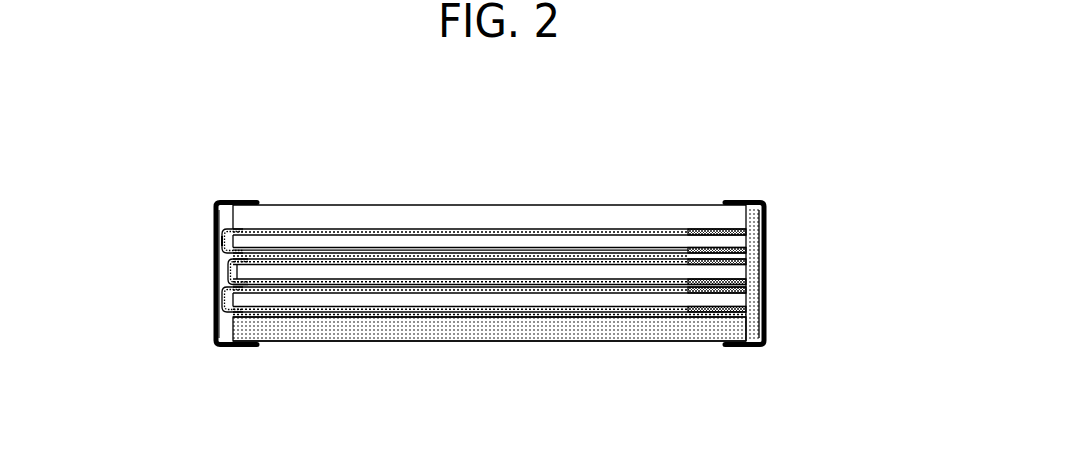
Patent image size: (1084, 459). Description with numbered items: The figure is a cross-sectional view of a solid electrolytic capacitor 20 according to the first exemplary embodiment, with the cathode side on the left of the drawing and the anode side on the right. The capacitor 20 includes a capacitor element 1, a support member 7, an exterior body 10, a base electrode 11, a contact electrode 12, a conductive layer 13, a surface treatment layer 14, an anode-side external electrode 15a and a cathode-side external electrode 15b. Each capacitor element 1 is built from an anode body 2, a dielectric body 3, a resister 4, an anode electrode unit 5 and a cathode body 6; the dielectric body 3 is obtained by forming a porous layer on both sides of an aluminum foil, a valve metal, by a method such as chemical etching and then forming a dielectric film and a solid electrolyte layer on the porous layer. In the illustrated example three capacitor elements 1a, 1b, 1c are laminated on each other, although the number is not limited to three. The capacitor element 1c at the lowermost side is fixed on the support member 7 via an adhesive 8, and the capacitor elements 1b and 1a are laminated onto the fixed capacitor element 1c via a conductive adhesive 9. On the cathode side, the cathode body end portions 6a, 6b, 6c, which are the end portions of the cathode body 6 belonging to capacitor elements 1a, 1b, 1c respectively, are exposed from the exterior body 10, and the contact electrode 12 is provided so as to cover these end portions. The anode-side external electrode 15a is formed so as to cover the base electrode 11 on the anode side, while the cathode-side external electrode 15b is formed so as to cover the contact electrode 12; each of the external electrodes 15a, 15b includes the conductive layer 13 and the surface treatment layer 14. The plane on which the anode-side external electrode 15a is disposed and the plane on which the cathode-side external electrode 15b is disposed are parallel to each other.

The capacitor element 1 is at (582, 135).
The capacitor element 1a is at (500, 243).
The capacitor element 1b is at (578, 270).
The capacitor element 1c is at (635, 300).
The anode body 2 is at (677, 242).
The dielectric body 3 is at (605, 233).
The resister 4 is at (708, 232).
The anode electrode unit 5 is at (737, 242).
The cathode body 6 is at (640, 233).
The cathode body end portion 6a is at (228, 247).
The cathode body end portion 6b is at (230, 275).
The cathode body end portion 6c is at (228, 303).
The support member 7 is at (525, 330).
The adhesive 8 is at (433, 320).
The conductive adhesive 9 is at (372, 287).
The exterior body 10 is at (365, 218).
The base electrode 11 is at (748, 243).
The contact electrode 12 is at (221, 236).
The conductive layer 13 is at (760, 277).
The surface treatment layer 14 is at (767, 312).
The anode-side external electrode 15a is at (868, 250).
The cathode-side external electrode 15b is at (127, 152).
The solid electrolytic capacitor 20 is at (460, 427).